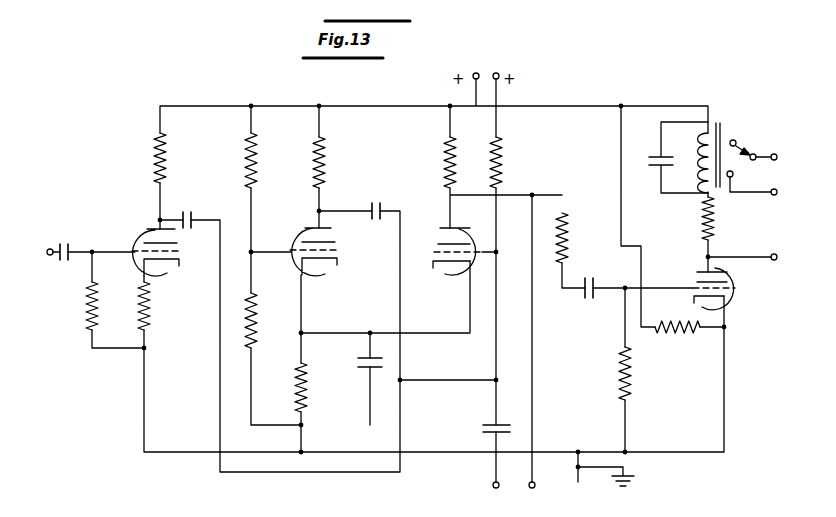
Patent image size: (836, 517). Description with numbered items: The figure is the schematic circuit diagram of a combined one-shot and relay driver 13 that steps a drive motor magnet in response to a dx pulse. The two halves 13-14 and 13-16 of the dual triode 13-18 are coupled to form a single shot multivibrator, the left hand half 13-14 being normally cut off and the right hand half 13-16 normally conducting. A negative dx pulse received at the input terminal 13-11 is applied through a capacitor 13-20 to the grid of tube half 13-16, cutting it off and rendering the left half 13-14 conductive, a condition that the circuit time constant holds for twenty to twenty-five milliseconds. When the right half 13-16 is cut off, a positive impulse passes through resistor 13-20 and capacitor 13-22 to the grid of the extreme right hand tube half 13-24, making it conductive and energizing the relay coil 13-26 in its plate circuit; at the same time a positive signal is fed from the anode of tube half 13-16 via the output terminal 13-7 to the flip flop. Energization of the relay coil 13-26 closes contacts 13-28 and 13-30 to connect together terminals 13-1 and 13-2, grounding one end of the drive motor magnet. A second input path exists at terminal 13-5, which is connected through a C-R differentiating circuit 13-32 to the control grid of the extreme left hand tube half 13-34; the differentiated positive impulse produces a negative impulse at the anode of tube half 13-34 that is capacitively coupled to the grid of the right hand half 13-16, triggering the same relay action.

The one shot relay driver 13 is at (131, 140).
The terminal 13-5 is at (49, 248).
The C-R differentiating circuit 13-32 is at (80, 275).
The extreme left hand tube half 13-34 is at (146, 234).
The left hand half of dual triode 13-14 is at (300, 232).
The dual triode 13-18 is at (290, 268).
The right hand half of dual triode 13-16 is at (468, 232).
The capacitor and resistor 13-20 is at (566, 244).
The capacitor 13-22 is at (594, 298).
The extreme right hand tube half 13-24 is at (736, 290).
The relay coil 13-26 is at (697, 150).
The contact 13-28 is at (752, 152).
The terminal 13-2 is at (775, 154).
The contact 13-30 is at (733, 174).
The terminal 13-1 is at (775, 195).
The input terminal 13-11 is at (493, 487).
The output terminal 13-7 is at (548, 496).